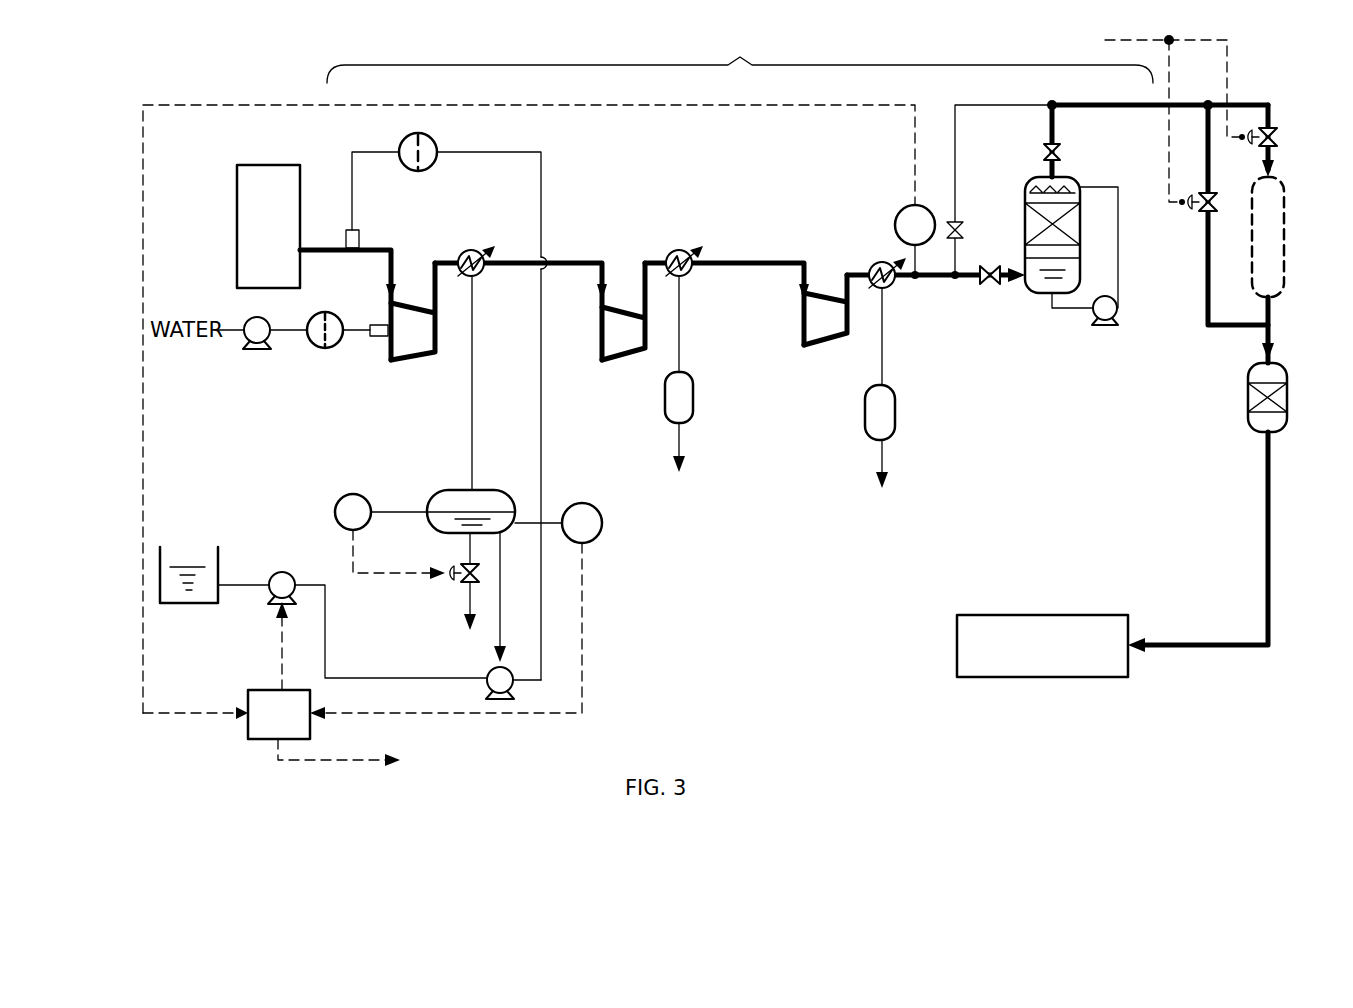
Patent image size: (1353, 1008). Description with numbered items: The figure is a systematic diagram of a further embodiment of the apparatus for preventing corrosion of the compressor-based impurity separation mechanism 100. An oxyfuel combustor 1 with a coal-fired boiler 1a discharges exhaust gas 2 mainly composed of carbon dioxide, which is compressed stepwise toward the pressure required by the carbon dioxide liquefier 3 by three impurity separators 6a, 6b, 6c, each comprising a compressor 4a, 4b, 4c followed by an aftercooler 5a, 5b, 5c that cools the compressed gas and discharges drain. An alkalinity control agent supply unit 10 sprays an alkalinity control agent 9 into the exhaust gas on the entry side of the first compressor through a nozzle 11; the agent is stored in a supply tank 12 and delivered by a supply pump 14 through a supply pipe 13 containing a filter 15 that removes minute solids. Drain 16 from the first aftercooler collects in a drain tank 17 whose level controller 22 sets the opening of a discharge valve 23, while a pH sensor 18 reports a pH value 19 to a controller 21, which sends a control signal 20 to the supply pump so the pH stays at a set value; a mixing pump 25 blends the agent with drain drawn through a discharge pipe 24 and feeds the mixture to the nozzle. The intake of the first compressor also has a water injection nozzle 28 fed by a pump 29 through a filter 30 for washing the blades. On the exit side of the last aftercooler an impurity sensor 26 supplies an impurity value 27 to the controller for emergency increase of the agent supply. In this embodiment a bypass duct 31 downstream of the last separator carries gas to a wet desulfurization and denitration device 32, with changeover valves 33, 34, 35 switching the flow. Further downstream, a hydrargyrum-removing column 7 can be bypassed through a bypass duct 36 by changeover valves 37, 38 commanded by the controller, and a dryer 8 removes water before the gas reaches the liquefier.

The compressor-based impurity separation mechanism 100 is at (740, 59).
The oxyfuel combustor 1 is at (230, 217).
The coal-fired boiler 1a is at (236, 190).
The exhaust gas 2 is at (320, 262).
The carbon dioxide liquefier 3 is at (1082, 615).
The compressor 4a is at (396, 368).
The compressor 4b is at (598, 365).
The compressor 4c is at (808, 352).
The aftercooler 5a is at (482, 276).
The aftercooler 5b is at (690, 276).
The aftercooler 5c is at (893, 285).
The first impurity separator 6a is at (440, 258).
The impurity separator 6b is at (650, 256).
The last impurity separator 6c is at (846, 262).
The hydrargyrum-removing column 7 is at (1252, 292).
The dryer 8 is at (1248, 412).
The alkalinity control agent 9 is at (490, 137).
The alkalinity control agent supply unit 10 is at (278, 466).
The nozzle 11 is at (345, 230).
The supply tank 12 is at (185, 605).
The supply pipe 13 is at (372, 152).
The supply pump 14 is at (272, 573).
The filter 15 is at (437, 142).
The drain 16 is at (507, 490).
The drain tank 17 is at (486, 490).
The pH sensor 18 is at (600, 540).
The pH value 19 is at (583, 628).
The control signal 20 is at (278, 648).
The controller 21 is at (1097, 54).
The level controller 22 is at (336, 516).
The discharge valve 23 is at (448, 586).
The discharge pipe 24 is at (503, 612).
The mixing pump 25 is at (487, 687).
The impurity sensor 26 is at (905, 208).
The impurity value 27 is at (745, 108).
The water injection nozzle 28 is at (372, 337).
The pump 29 is at (257, 348).
The filter 30 is at (320, 349).
The bypass duct 31 is at (1005, 290).
The wet desulfurization and denitration device 32 is at (1085, 182).
The changeover valve 33 is at (992, 292).
The changeover valve 34 is at (962, 215).
The changeover valve 35 is at (1044, 142).
The bypass duct 36 is at (1205, 328).
The changeover valve 37 is at (1190, 212).
The changeover valve 38 is at (1277, 126).